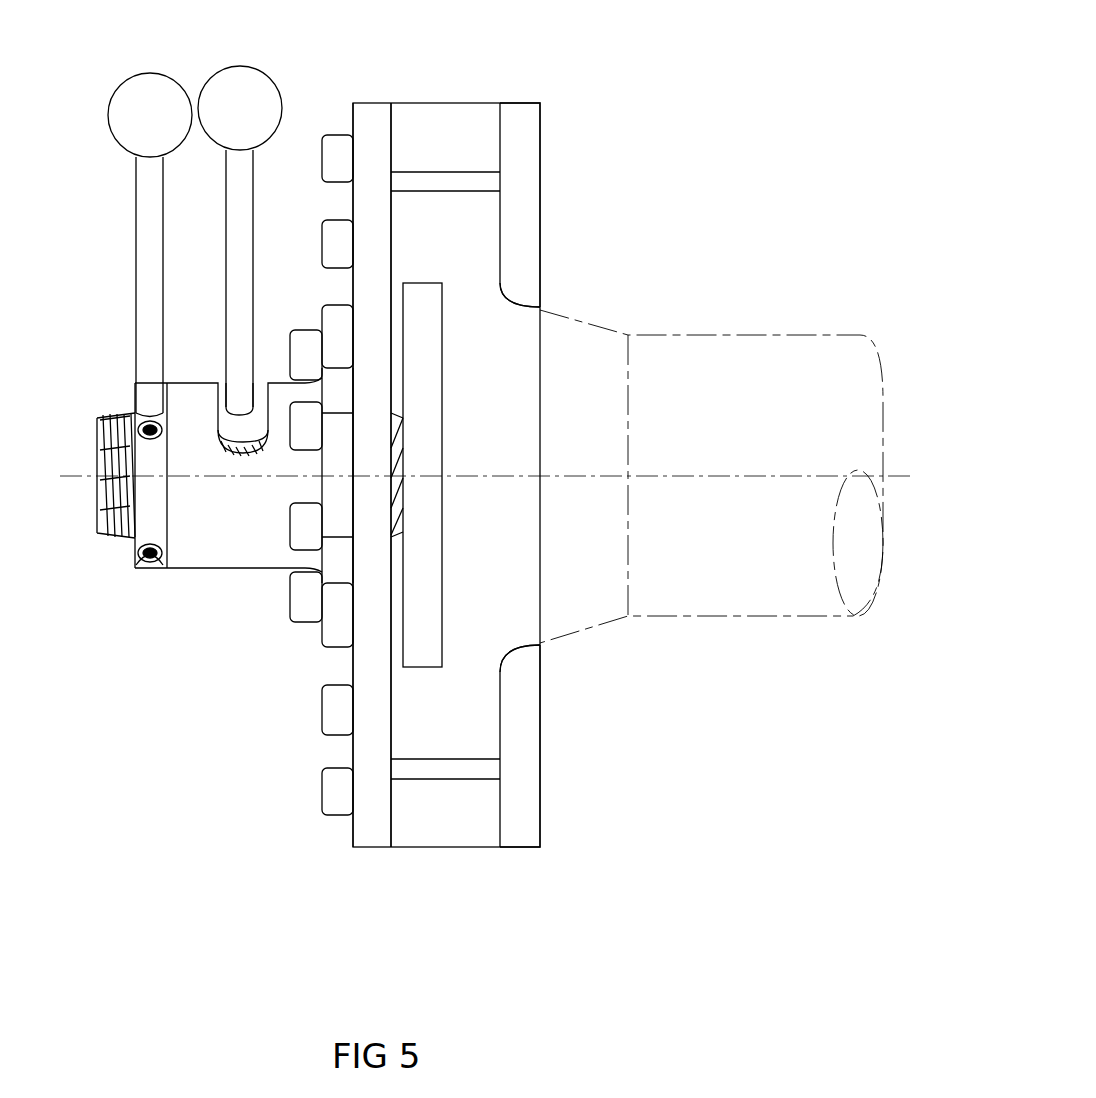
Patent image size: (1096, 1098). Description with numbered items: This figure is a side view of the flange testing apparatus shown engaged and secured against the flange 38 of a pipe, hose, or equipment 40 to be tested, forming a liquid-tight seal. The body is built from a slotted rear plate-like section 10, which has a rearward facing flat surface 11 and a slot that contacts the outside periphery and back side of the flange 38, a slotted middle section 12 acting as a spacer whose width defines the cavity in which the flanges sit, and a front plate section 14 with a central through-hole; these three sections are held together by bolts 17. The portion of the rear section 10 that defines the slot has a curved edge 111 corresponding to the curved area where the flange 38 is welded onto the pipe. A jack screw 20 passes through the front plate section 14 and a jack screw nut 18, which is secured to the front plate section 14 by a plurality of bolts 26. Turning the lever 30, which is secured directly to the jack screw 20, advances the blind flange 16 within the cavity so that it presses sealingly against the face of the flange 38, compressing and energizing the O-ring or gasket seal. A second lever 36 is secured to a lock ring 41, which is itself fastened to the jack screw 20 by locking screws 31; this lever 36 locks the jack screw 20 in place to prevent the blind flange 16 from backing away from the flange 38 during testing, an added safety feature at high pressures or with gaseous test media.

The slotted rear plate-like section 10 is at (522, 155).
The rearward facing flat surface 11 is at (543, 752).
The slotted middle section 12 is at (445, 102).
The front plate section 14 is at (371, 852).
The blind flange 16 is at (425, 283).
The bolts 17 is at (320, 728).
The jack screw nut 18 is at (228, 568).
The jack screw 20 is at (98, 417).
The bolts 26 is at (290, 617).
The lever 30 is at (225, 282).
The locking screws 31 is at (148, 435).
The lever 36 is at (138, 287).
The flange 38 is at (475, 372).
The pipe, hose, or equipment to be tested 40 is at (690, 615).
The lock ring 41 is at (150, 570).
The curved edge 111 is at (522, 298).